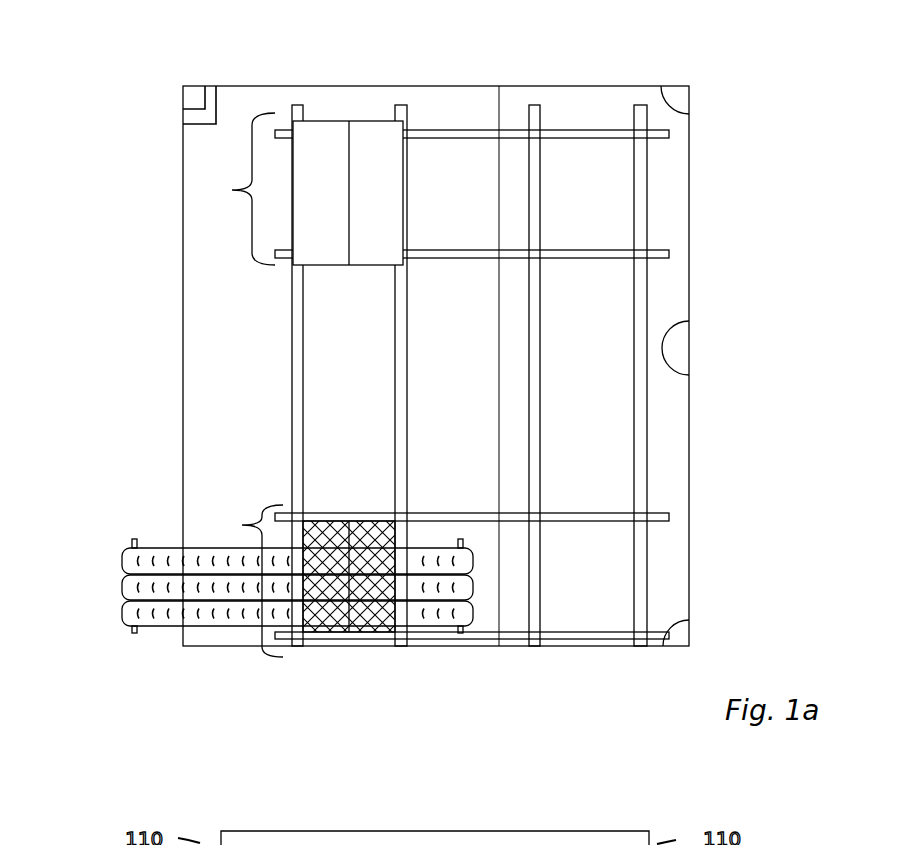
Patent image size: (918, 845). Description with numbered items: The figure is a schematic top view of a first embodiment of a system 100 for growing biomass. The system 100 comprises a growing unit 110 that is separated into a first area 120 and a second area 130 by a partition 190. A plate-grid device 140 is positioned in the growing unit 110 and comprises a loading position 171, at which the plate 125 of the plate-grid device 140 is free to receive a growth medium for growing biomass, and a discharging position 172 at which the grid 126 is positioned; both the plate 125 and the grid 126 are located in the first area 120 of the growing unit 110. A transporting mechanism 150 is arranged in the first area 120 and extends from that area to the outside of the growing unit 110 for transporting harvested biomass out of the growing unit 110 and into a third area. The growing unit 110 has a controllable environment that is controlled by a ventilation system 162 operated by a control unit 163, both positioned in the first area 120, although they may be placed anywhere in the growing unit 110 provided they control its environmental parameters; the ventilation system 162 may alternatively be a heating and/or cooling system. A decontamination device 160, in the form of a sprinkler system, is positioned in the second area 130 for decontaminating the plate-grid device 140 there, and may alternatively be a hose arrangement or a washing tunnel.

The system for growing biomass 100 is at (128, 79).
The growing unit 110 is at (182, 295).
The first area 120 is at (253, 348).
The plate 125 is at (358, 150).
The grid 126 is at (378, 616).
The second area 130 is at (670, 441).
The plate-grid device 140 is at (636, 263).
The transporting mechanism 150 is at (199, 625).
The decontamination device 160 is at (696, 102).
The ventilation system 162 is at (226, 94).
The control unit 163 is at (186, 87).
The loading position 171 is at (213, 186).
The discharging position 172 is at (225, 522).
The partition 190 is at (495, 85).